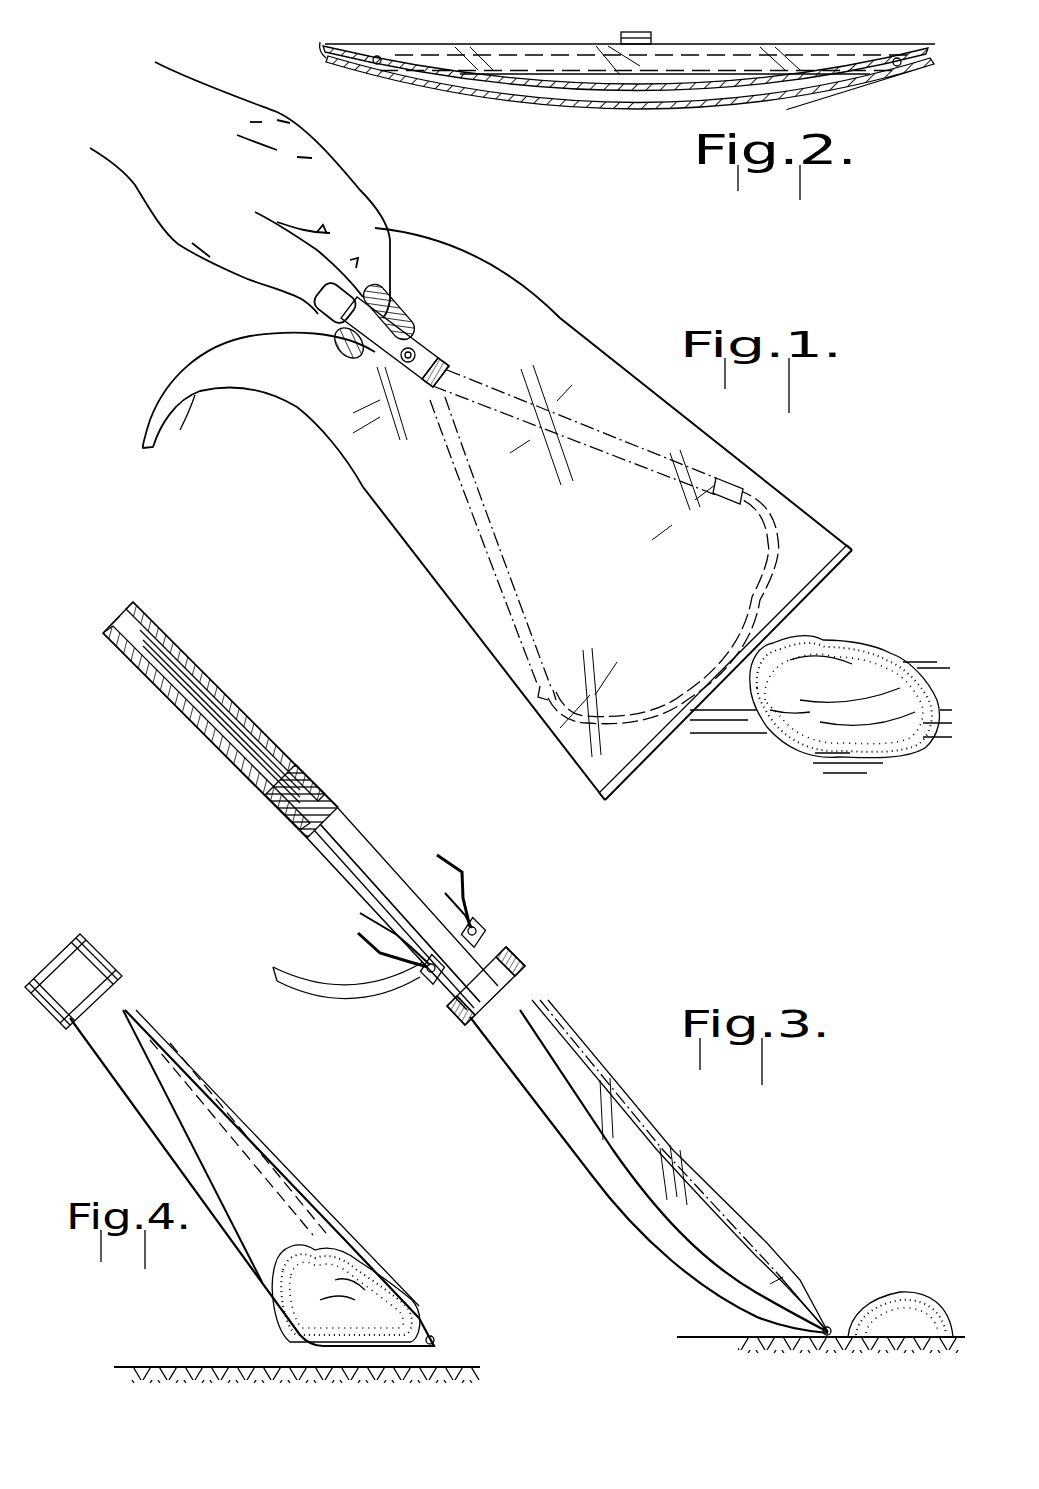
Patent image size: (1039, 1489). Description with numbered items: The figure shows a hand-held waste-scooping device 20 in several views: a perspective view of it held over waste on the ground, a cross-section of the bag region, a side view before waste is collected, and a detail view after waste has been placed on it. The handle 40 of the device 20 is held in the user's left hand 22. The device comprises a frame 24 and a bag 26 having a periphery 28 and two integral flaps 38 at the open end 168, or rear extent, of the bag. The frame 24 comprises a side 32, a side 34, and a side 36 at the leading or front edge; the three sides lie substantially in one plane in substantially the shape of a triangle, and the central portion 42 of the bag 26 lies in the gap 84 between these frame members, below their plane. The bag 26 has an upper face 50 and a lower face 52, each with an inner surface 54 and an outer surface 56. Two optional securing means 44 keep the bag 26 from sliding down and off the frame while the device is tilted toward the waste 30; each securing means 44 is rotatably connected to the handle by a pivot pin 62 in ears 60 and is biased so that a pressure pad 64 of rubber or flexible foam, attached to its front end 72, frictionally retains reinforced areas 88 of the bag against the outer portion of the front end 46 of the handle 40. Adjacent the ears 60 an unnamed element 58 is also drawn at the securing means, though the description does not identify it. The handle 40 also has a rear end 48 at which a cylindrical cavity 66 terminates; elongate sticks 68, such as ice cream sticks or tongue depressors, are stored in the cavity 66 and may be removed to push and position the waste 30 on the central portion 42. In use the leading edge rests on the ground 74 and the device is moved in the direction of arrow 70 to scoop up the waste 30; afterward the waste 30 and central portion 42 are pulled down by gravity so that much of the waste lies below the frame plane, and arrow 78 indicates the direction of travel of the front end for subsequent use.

In FIG. 1, the device 20 is at (600, 332).
In FIG. 1, the left hand 22 is at (176, 164).
In FIG. 1, the frame 24 is at (462, 503).
In FIG. 2, the bag 26 is at (573, 122).
In FIG. 1, the bag 26 is at (623, 514).
In FIG. 3, the bag 26 is at (671, 1167).
In FIG. 2, the periphery 28 is at (323, 42).
In FIG. 1, the periphery 28 is at (682, 410).
In FIG. 3, the periphery 28 is at (838, 1328).
In FIG. 1, the waste 30 is at (884, 664).
In FIG. 3, the waste 30 is at (893, 1293).
In FIG. 4, the waste 30 is at (414, 1298).
In FIG. 2, the side 32 is at (377, 66).
In FIG. 1, the side 32 is at (487, 542).
In FIG. 3, the side 32 is at (640, 1137).
In FIG. 4, the side 32 is at (240, 1140).
In FIG. 2, the side 34 is at (899, 74).
In FIG. 1, the side 34 is at (652, 446).
In FIG. 1, the side 36 is at (733, 640).
In FIG. 3, the side 36 is at (830, 1323).
In FIG. 1, the integral flaps 38 is at (415, 240).
In FIG. 3, the integral flaps 38 is at (282, 969).
In FIG. 1, the handle 40 is at (384, 334).
In FIG. 3, the handle 40 is at (353, 828).
In FIG. 2, the central portion 42 is at (639, 100).
In FIG. 1, the central portion 42 is at (601, 556).
In FIG. 4, the central portion 42 is at (290, 1325).
In FIG. 1, the securing means 44 is at (334, 337).
In FIG. 3, the securing means 44 is at (480, 930).
In FIG. 3, the front end 46 is at (490, 1000).
In FIG. 4, the front end 46 is at (68, 1000).
In FIG. 3, the rear end 48 is at (140, 609).
In FIG. 2, the upper face 50 is at (588, 88).
In FIG. 3, the upper face 50 is at (688, 1213).
In FIG. 4, the upper face 50 is at (246, 1230).
In FIG. 2, the lower face 52 is at (598, 108).
In FIG. 3, the lower face 52 is at (626, 1217).
In FIG. 4, the lower face 52 is at (177, 1165).
In FIG. 2, the inner surface 54 is at (432, 86).
In FIG. 3, the inner surface 54 is at (538, 1126).
In FIG. 2, the outer surface 56 is at (533, 82).
In FIG. 3, the outer surface 56 is at (562, 1141).
In FIG. 3, the lever 58 is at (438, 856).
In FIG. 3, the ears 60 is at (400, 916).
In FIG. 3, the pivot pin 62 is at (476, 926).
In FIG. 2, the pressure pad 64 is at (655, 44).
In FIG. 3, the pressure pad 64 is at (504, 958).
In FIG. 4, the pressure pad 64 is at (122, 988).
In FIG. 3, the cylindrical cavity 66 is at (112, 613).
In FIG. 3, the elongate sticks 68 is at (120, 613).
In FIG. 3, the arrow 70 is at (712, 1305).
In FIG. 2, the front end 72 is at (649, 32).
In FIG. 3, the front end 72 is at (520, 972).
In FIG. 4, the front end 72 is at (114, 964).
In FIG. 3, the ground 74 is at (700, 1374).
In FIG. 4, the arrow 78 is at (444, 1351).
In FIG. 1, the gap 84 is at (735, 452).
In FIG. 3, the reinforced areas 88 is at (492, 944).
In FIG. 1, the open end 168 is at (253, 333).